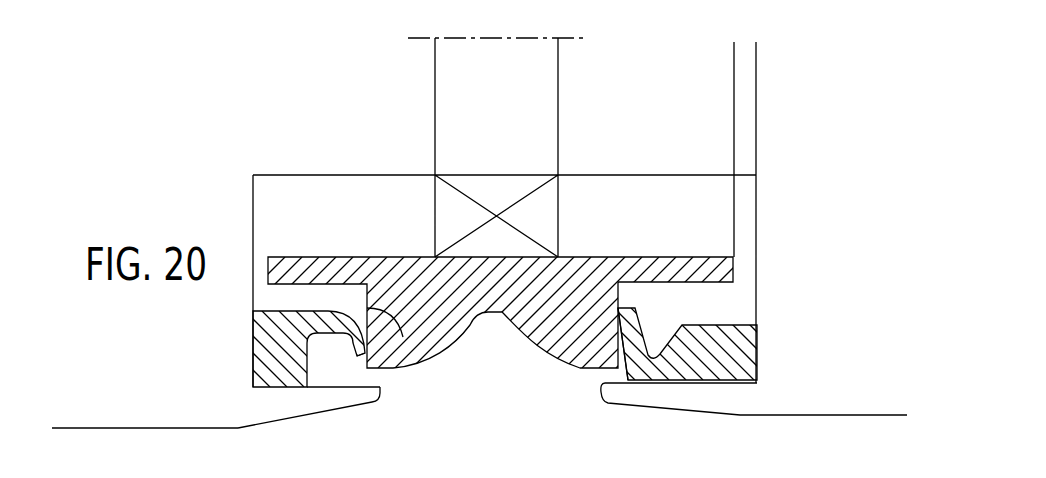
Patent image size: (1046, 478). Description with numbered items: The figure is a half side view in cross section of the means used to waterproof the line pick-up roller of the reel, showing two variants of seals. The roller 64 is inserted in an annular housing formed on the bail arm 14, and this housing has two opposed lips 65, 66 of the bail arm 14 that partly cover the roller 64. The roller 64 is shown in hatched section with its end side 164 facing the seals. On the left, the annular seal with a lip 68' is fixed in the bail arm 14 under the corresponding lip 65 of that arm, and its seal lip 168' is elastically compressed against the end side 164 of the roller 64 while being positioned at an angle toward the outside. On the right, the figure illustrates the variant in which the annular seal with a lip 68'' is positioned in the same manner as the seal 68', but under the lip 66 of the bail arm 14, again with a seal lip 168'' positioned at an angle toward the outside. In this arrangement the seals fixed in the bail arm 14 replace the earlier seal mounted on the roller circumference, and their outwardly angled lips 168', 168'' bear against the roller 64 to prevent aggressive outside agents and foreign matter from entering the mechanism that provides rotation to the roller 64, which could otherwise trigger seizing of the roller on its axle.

The bail arm 14 is at (155, 412).
The roller 64 is at (403, 270).
The lip of the bail arm 65 is at (306, 407).
The lip of the bail arm 66 is at (754, 406).
The annular seal with a lip 68' is at (308, 349).
The annular seal with a lip 68'' is at (684, 380).
The end side of the roller 164 is at (403, 337).
The seal lip 168' is at (367, 401).
The seal lip 168'' is at (590, 365).